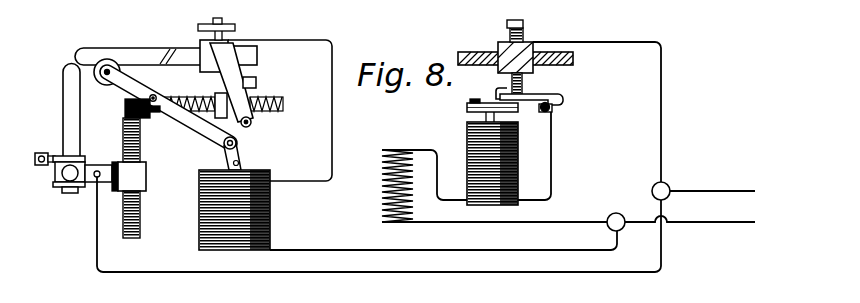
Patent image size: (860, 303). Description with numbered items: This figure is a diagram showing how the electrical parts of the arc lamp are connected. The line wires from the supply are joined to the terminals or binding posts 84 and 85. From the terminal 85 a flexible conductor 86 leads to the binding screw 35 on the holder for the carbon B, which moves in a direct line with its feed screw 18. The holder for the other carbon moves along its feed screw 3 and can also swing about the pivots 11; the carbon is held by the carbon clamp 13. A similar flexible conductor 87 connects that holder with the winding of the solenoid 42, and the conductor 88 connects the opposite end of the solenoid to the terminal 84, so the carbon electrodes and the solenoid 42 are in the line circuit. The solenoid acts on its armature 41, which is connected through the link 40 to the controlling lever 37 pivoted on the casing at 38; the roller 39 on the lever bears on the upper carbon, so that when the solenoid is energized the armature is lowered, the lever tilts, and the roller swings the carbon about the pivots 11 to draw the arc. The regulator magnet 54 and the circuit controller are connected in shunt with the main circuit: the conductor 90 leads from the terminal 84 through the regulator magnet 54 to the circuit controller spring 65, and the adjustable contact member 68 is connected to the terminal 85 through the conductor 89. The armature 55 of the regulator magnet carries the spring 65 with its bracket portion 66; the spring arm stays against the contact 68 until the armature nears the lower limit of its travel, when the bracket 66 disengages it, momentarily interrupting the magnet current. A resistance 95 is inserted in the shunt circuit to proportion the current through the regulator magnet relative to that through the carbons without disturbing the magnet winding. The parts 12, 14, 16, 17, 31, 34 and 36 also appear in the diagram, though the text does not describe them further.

The feed screw 3 is at (276, 100).
The pivots 11 is at (248, 125).
The lever 12 is at (231, 82).
The carbon clamp 13 is at (203, 42).
The stop block 14 is at (255, 79).
The rack bar 16 is at (148, 108).
The connecting block 17 is at (125, 115).
The feed screw 18 is at (147, 219).
The valve stem block 31 is at (137, 177).
The valve 34 is at (77, 167).
The binding screw 35 is at (96, 156).
The plate 36 is at (115, 184).
The controlling lever 37 is at (198, 126).
The pivot 38 is at (155, 97).
The roller 39 is at (105, 85).
The link 40 is at (227, 150).
The armature 41 is at (241, 165).
The solenoid 42 is at (272, 218).
The regulator magnet 54 is at (519, 166).
The armature 55 is at (468, 110).
The circuit controller spring 65 is at (562, 95).
The bracket portion 66 is at (495, 93).
The adjustable contact member 68 is at (507, 81).
The terminal 84 is at (621, 206).
The terminal 85 is at (668, 184).
The flexible conductor 86 is at (435, 273).
The flexible conductor 87 is at (331, 131).
The conductor 88 is at (347, 250).
The conductor 89 is at (663, 131).
The conductor 90 is at (557, 228).
The resistance 95 is at (424, 172).
The carbon B is at (70, 110).